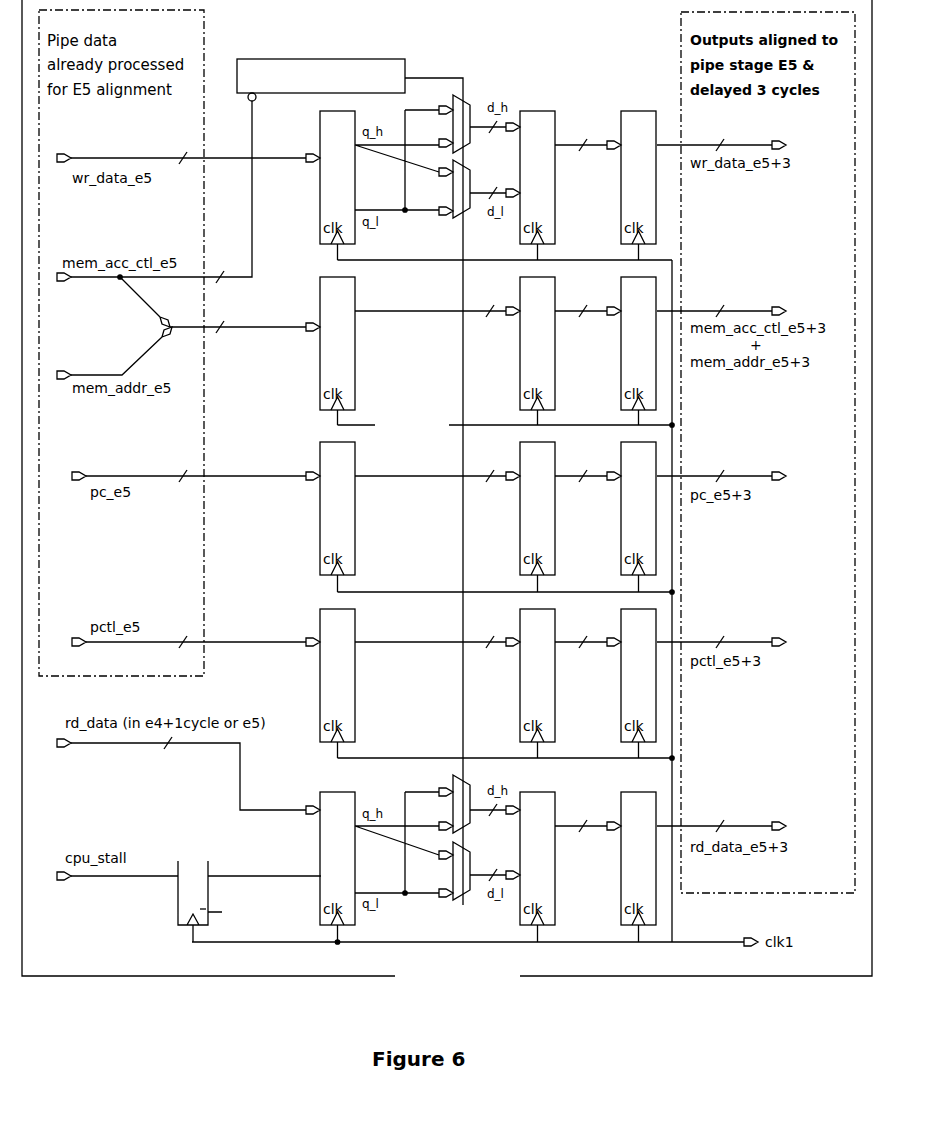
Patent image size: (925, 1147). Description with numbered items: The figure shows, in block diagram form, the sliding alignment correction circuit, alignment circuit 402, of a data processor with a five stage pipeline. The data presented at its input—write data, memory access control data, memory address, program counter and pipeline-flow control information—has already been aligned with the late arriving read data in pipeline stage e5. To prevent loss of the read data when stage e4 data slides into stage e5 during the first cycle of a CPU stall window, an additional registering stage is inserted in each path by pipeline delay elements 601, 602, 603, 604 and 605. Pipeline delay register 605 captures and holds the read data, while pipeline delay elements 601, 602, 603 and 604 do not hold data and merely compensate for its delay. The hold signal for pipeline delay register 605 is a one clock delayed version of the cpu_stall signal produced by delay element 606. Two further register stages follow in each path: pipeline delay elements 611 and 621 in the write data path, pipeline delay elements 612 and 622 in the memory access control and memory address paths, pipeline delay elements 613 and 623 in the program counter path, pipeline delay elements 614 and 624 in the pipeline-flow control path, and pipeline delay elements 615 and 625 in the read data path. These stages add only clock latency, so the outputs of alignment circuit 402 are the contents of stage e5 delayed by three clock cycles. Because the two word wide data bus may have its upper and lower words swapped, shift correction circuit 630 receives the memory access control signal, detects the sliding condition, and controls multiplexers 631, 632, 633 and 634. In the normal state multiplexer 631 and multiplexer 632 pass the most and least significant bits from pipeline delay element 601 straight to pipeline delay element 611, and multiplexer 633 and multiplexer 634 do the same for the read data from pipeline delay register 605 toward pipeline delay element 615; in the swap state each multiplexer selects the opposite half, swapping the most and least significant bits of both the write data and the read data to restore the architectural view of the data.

The alignment circuit 402 is at (570, 54).
The pipeline delay element 601 is at (320, 180).
The pipeline delay element 602 is at (320, 377).
The pipeline delay element 603 is at (320, 518).
The pipeline delay element 604 is at (320, 715).
The pipeline delay register 605 is at (320, 875).
The delay element 606 is at (177, 903).
The pipeline delay element 611 is at (537, 145).
The pipeline delay element 612 is at (520, 375).
The pipeline delay element 613 is at (518, 537).
The pipeline delay element 614 is at (538, 680).
The pipeline delay element 615 is at (520, 903).
The pipeline delay element 621 is at (648, 145).
The pipeline delay element 622 is at (645, 323).
The pipeline delay element 623 is at (647, 483).
The pipeline delay element 624 is at (647, 660).
The pipeline delay element 625 is at (647, 842).
The shift correction circuit 630 is at (300, 90).
The multiplexer 631 is at (465, 125).
The multiplexer 632 is at (463, 210).
The multiplexer 633 is at (455, 793).
The multiplexer 634 is at (468, 903).